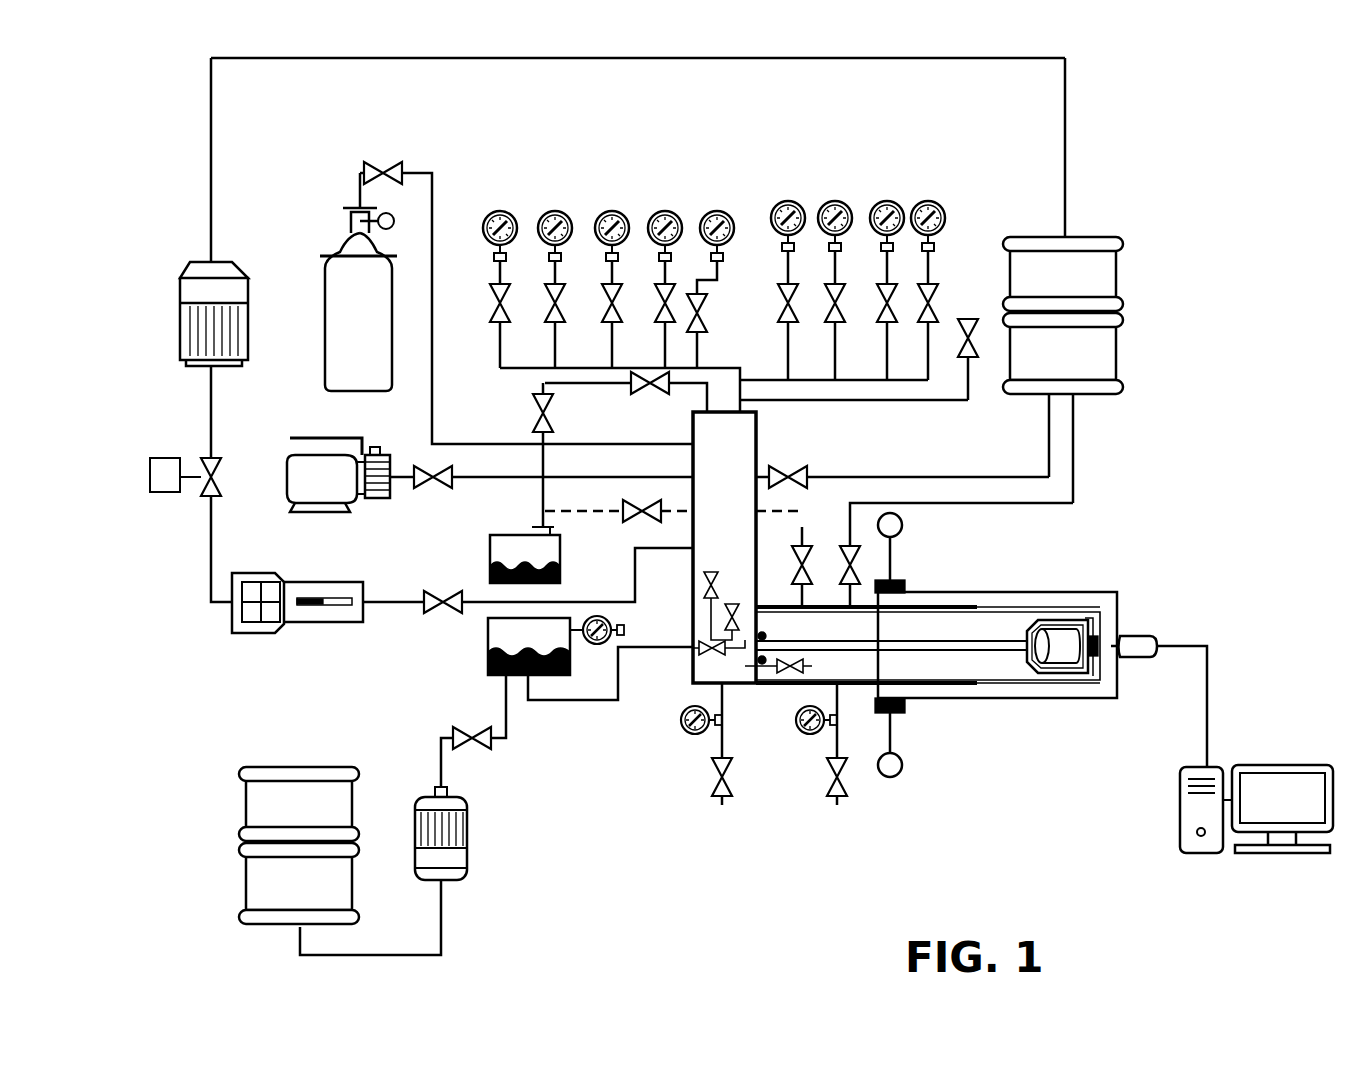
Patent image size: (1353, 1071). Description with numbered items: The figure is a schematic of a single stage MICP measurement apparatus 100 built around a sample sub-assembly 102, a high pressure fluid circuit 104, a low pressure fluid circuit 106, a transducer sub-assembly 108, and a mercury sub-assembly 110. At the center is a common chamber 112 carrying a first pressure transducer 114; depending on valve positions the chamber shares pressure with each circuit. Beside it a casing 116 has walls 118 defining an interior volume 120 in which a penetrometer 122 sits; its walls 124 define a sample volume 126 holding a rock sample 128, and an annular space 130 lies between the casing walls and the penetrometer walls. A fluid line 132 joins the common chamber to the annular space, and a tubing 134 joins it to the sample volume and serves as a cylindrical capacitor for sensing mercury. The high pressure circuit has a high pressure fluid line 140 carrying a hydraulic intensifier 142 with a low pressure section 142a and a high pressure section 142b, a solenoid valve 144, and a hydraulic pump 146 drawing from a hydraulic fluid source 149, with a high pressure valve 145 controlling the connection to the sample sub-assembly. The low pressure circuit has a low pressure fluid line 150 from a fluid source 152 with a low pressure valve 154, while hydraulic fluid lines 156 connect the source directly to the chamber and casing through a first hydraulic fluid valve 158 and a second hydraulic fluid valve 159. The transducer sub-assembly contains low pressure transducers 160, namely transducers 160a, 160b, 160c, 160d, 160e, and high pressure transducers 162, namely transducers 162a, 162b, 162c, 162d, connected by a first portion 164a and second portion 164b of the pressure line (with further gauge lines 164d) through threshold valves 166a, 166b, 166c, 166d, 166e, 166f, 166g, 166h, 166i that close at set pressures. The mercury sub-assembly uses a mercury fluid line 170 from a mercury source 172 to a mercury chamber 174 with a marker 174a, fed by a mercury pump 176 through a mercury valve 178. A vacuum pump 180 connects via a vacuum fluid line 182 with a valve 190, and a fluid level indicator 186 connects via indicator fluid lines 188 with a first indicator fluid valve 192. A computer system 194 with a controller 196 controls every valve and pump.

The single stage MICP measurement apparatus 100 is at (115, 148).
The sample sub-assembly 102 is at (1128, 571).
The high pressure fluid circuit 104 is at (150, 584).
The low pressure fluid circuit 106 is at (450, 218).
The transducer sub-assembly 108 is at (702, 108).
The mercury sub-assembly 110 is at (528, 799).
The common chamber 112 is at (760, 445).
The first pressure transducer 114 is at (680, 728).
The casing 116 is at (993, 595).
The walls 118 is at (790, 690).
The interior volume 120 is at (1001, 634).
The penetrometer 122 is at (1080, 660).
The walls 124 is at (1053, 675).
The sample volume 126 is at (1075, 680).
The rock sample 128 is at (1045, 676).
The annular space 130 is at (1000, 690).
The fluid line 132 is at (752, 690).
The tubing 134 is at (852, 690).
The high pressure fluid line 140 is at (209, 195).
The hydraulic intensifier 142 is at (260, 645).
The low pressure section 142a is at (258, 596).
The high pressure section 142b is at (332, 606).
The solenoid valve 144 is at (148, 476).
The high pressure valve 145 is at (432, 592).
The hydraulic pump 146 is at (178, 318).
The hydraulic fluid source 149 is at (1088, 236).
The low pressure fluid line 150 is at (358, 170).
The fluid source 152 is at (326, 245).
The low pressure valve 154 is at (385, 158).
The hydraulic fluid lines 156 is at (935, 476).
The first hydraulic fluid valve 158 is at (805, 470).
The second hydraulic fluid valve 159 is at (855, 568).
The low pressure transducers 160 is at (605, 162).
The first low pressure transducer 160a is at (493, 208).
The second low pressure transducer 160b is at (548, 208).
The third low pressure transducer 160c is at (614, 208).
The fourth low pressure transducer 160d is at (668, 208).
The fifth low pressure transducer 160e is at (720, 208).
The high pressure transducers 162 is at (846, 158).
The first high pressure transducer 162a is at (788, 200).
The second high pressure transducer 162b is at (833, 200).
The third high pressure transducer 162c is at (886, 200).
The fourth high pressure transducer 162d is at (927, 200).
The first portion of pressure fluid line 164a is at (742, 376).
The second portion of pressure fluid line 164b is at (498, 275).
The gauge line 164d is at (553, 274).
The first threshold valve 166a is at (498, 312).
The second threshold valve 166b is at (553, 312).
The third threshold valve 166c is at (610, 312).
The fourth threshold valve 166d is at (663, 312).
The fifth threshold valve 166e is at (702, 314).
The sixth threshold valve 166f is at (790, 314).
The seventh threshold valve 166g is at (838, 314).
The eighth threshold valve 166h is at (889, 314).
The ninth threshold valve 166i is at (932, 312).
The mercury fluid line 170 is at (560, 705).
The mercury source 172 is at (238, 838).
The mercury chamber 174 is at (488, 660).
The marker 174a is at (571, 661).
The mercury pump 176 is at (470, 862).
The mercury valve 178 is at (455, 728).
The vacuum pump 180 is at (330, 436).
The vacuum fluid line 182 is at (454, 486).
The fluid level indicator 186 is at (490, 565).
The indicator fluid lines 188 is at (540, 490).
The valve 190 is at (430, 482).
The first indicator fluid valve 192 is at (552, 410).
The computer system 194 is at (1276, 758).
The controller 196 is at (1178, 855).